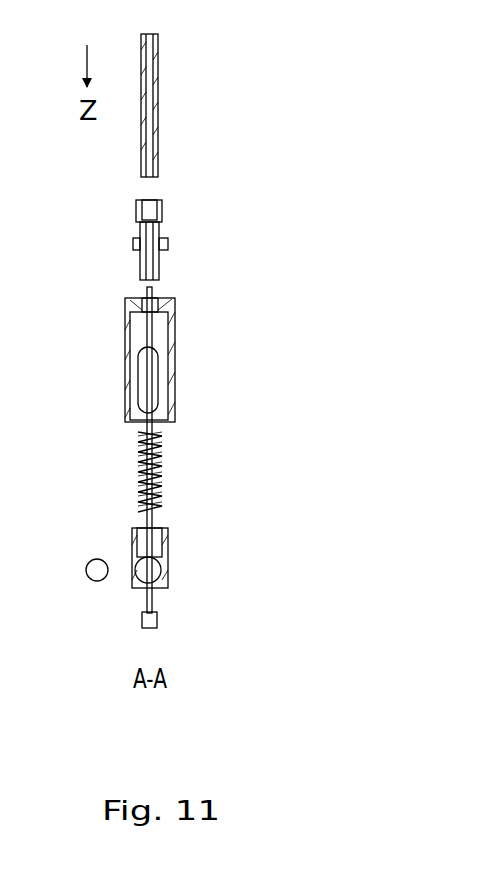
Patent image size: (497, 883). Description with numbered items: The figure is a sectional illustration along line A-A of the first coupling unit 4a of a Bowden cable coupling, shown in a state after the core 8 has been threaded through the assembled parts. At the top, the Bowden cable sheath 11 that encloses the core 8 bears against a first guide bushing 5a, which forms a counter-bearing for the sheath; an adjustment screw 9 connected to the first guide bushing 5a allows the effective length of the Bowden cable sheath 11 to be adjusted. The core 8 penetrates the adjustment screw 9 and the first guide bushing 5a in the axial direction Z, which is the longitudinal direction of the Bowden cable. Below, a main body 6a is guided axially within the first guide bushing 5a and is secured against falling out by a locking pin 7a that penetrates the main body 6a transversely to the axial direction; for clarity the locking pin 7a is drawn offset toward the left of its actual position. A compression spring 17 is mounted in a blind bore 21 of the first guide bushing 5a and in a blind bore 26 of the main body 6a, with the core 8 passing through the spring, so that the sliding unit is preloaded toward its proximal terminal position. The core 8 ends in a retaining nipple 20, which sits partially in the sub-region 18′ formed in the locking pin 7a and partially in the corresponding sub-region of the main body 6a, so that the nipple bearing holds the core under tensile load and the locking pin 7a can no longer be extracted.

The Bowden cable sheath 11 is at (145, 102).
The adjustment screw 9 is at (148, 208).
The first guide bushing 5a is at (100, 283).
The blind bore 26 is at (155, 533).
The core 8 is at (150, 343).
The blind bore 21 is at (155, 331).
The first coupling unit 4a is at (271, 380).
The compression spring 17 is at (140, 463).
The main body 6a is at (185, 560).
The locking pin 7a is at (105, 575).
The sub-region 18′ is at (93, 582).
The retaining nipple 20 is at (157, 617).